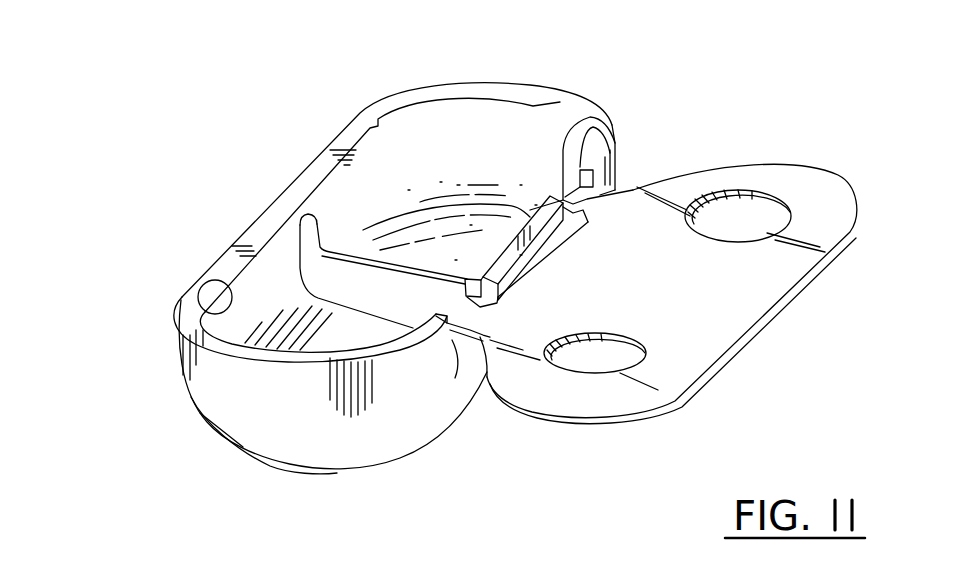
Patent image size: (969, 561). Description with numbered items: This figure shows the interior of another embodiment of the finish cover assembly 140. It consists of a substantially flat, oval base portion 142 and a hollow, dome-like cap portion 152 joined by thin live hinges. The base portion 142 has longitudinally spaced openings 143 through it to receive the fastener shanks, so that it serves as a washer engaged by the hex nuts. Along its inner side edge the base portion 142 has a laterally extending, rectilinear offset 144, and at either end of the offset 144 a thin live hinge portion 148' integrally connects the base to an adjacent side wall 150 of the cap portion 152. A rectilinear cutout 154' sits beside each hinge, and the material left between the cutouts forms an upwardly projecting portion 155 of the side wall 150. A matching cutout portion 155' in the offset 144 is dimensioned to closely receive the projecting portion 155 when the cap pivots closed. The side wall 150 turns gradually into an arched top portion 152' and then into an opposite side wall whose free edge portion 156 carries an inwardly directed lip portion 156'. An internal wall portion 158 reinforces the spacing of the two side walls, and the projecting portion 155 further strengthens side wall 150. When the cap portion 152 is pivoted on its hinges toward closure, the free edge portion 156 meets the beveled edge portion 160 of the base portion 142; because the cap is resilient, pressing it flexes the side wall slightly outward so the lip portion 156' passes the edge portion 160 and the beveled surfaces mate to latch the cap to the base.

The finish cover assembly 140 is at (481, 430).
The base portion 142 is at (785, 268).
The opening 143 is at (600, 342).
The offset 144 is at (550, 260).
The live hinge portion 148' is at (520, 321).
The side wall 150 is at (470, 352).
The cap portion 152 is at (333, 424).
The top portion 152' is at (277, 375).
The cutout 154' is at (422, 295).
The upwardly projecting portion 155 is at (508, 208).
The cutout portion 155' is at (575, 267).
The free edge portion 156 is at (382, 222).
The lip portion 156' is at (156, 323).
The internal wall portion 158 is at (307, 272).
The edge portion 160 is at (727, 353).